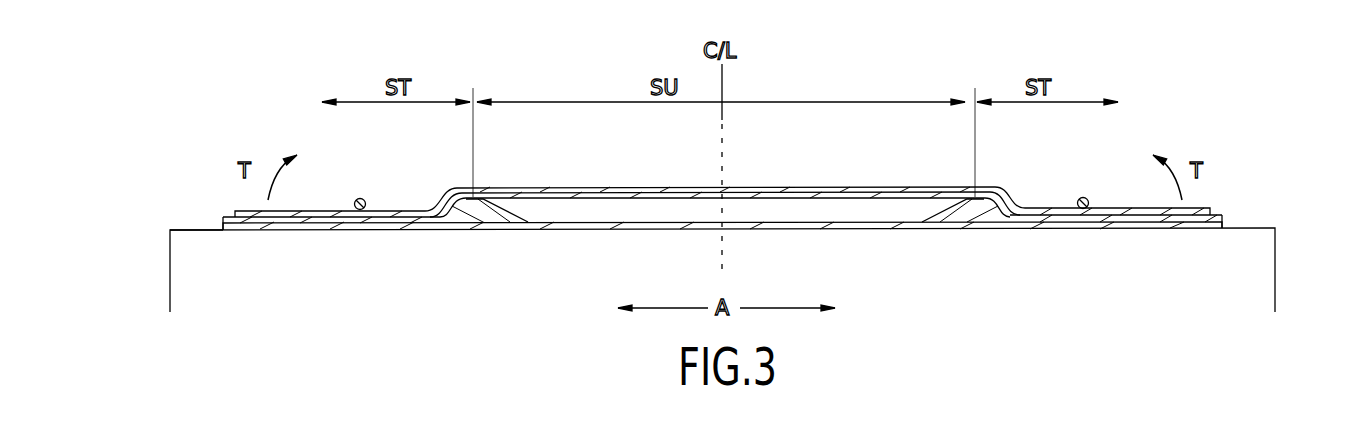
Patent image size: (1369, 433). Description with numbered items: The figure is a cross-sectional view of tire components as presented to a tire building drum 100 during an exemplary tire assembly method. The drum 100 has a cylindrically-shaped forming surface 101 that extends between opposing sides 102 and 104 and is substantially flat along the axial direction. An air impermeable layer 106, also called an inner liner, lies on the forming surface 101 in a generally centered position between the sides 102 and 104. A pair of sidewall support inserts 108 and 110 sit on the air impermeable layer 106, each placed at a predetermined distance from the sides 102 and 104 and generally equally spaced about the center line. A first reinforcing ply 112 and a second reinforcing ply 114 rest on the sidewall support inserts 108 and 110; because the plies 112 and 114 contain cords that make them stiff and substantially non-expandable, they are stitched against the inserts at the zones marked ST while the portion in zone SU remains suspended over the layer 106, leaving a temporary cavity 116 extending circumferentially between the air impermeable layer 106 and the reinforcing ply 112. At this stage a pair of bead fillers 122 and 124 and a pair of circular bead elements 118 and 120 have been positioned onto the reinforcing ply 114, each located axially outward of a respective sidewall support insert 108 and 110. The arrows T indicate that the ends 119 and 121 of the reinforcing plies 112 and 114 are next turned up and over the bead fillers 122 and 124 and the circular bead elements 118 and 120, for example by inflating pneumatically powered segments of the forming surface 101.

The tire building drum 100 is at (1245, 258).
The forming surface 101 is at (193, 245).
The side of drum 102 is at (170, 150).
The side of drum 104 is at (1272, 155).
The air impermeable layer 106 is at (826, 232).
The sidewall support insert 108 is at (466, 212).
The sidewall support insert 110 is at (977, 220).
The first reinforcing ply 112 is at (895, 188).
The second reinforcing ply 114 is at (822, 186).
The temporary cavity 116 is at (634, 210).
The circular bead element 118 is at (360, 198).
The end of reinforcing plies 119 is at (234, 245).
The circular bead element 120 is at (1085, 197).
The end of reinforcing plies 121 is at (1215, 245).
The bead filler 122 is at (400, 208).
The bead filler 124 is at (1037, 206).